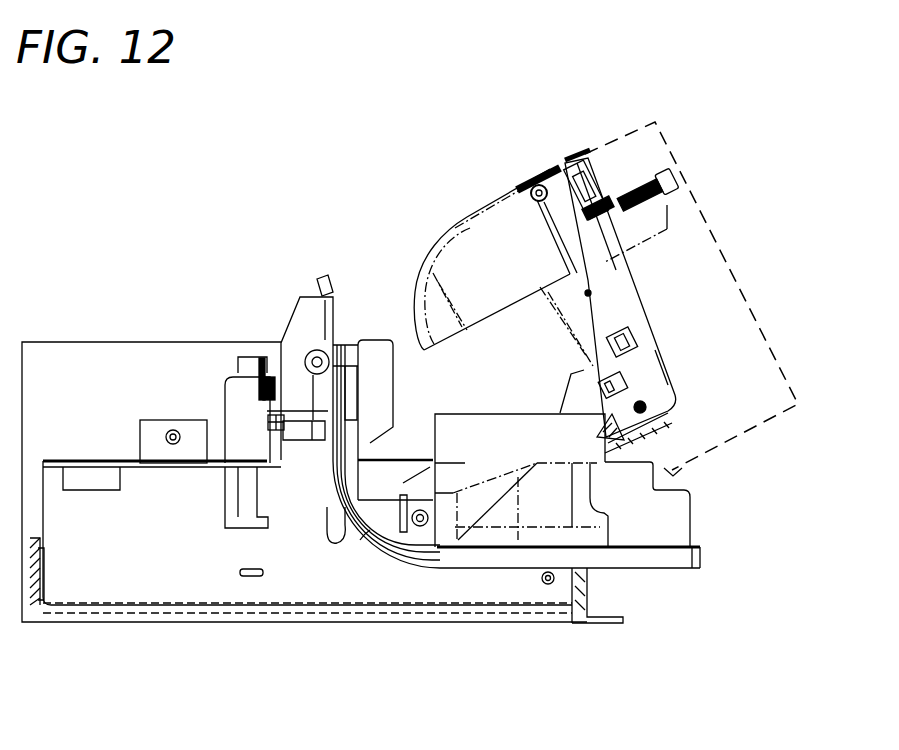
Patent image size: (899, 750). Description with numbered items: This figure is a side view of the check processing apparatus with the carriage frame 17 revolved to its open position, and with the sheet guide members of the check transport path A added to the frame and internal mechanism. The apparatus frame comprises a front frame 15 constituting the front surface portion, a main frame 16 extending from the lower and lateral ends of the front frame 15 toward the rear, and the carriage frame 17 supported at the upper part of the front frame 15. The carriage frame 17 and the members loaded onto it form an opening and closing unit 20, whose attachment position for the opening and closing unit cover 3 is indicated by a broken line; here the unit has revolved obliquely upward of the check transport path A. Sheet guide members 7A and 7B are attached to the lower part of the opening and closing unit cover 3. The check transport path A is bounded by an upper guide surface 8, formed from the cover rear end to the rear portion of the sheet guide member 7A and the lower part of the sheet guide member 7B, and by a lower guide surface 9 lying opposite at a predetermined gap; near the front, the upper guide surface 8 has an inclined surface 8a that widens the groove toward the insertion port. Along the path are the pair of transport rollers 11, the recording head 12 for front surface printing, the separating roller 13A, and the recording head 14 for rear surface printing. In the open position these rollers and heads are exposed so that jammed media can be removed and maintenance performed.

The opening and closing unit cover 3 is at (763, 430).
The sheet guide member 7A is at (500, 230).
The sheet guide member 7B is at (515, 435).
The upper guide surface 8 is at (446, 237).
The inclined surface 8a is at (583, 568).
The lower guide surface 9 is at (467, 556).
The pair of transport rollers 11 is at (447, 552).
The recording head 12 is at (621, 177).
The roller 13A is at (536, 184).
The recording head 14 is at (256, 345).
The front frame 15 is at (590, 594).
The main frame 16 is at (153, 567).
The carriage frame 17 is at (661, 342).
The opening and closing unit 20 is at (656, 297).
The check transport path A is at (377, 533).